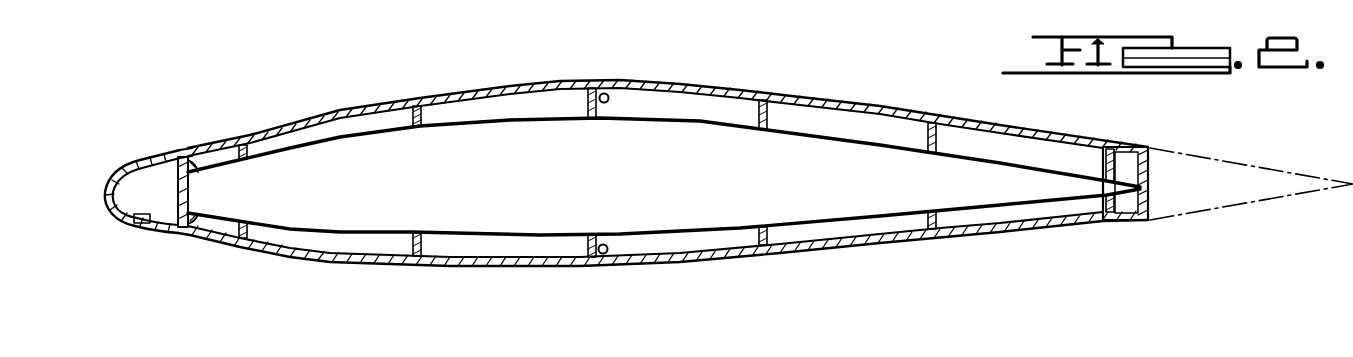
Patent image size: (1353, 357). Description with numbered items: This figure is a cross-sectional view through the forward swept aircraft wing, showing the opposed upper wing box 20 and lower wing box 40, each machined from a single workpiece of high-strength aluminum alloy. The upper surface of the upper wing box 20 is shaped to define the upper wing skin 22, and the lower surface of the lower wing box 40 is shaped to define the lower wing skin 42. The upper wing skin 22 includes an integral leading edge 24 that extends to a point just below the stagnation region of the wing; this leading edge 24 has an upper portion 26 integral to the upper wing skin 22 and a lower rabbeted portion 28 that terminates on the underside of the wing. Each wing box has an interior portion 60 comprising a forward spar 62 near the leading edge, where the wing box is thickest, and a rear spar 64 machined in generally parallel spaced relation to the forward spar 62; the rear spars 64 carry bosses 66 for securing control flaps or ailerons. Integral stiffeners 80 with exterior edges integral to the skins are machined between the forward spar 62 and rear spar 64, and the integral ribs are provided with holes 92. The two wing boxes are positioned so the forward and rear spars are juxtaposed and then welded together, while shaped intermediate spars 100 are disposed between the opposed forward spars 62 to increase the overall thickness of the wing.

The upper wing box 20 is at (845, 120).
The upper wing skin 22 is at (1007, 108).
The integral leading edge 24 is at (103, 186).
The upper portion of the leading edge 26 is at (130, 158).
The lower rabbeted portion 28 is at (113, 224).
The lower wing box 40 is at (858, 232).
The lower wing skin 42 is at (993, 233).
The interior portion 60 is at (350, 237).
The forward spar 62 is at (200, 151).
The rear spar 64 is at (1127, 153).
The bosses 66 is at (1150, 200).
The integral stiffeners 80 is at (927, 212).
The holes 92 is at (607, 95).
The shaped intermediate spars 100 is at (192, 193).